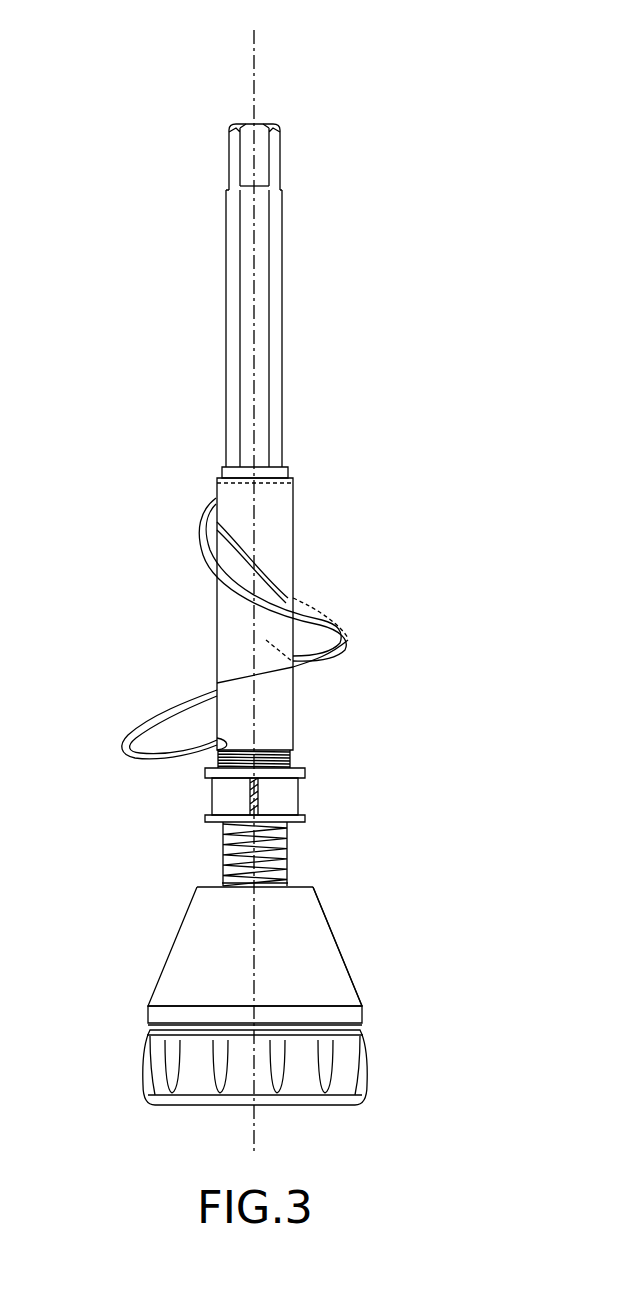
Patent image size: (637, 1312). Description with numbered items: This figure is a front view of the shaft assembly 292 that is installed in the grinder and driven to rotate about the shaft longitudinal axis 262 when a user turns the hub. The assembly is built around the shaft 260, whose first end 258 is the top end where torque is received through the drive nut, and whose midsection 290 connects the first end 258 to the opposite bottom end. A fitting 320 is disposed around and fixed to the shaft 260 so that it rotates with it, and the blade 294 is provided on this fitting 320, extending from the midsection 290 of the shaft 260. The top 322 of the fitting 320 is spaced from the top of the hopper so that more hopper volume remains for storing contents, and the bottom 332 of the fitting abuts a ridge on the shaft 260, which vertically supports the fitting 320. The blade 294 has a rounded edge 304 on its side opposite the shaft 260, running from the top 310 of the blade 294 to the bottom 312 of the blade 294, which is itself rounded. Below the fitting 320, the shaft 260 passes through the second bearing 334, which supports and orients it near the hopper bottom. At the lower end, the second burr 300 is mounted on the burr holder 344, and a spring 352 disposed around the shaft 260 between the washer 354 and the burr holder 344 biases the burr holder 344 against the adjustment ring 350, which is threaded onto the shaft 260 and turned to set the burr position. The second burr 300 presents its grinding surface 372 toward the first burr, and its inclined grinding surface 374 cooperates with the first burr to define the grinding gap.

The shaft longitudinal axis 262 is at (254, 48).
The first end 258 is at (262, 153).
The shaft 260 is at (260, 413).
The midsection 290 is at (260, 450).
The top of the fitting 322 is at (275, 478).
The fitting 320 is at (268, 625).
The top of the blade 310 is at (208, 508).
The edge 304 is at (330, 613).
The blade 294 is at (310, 643).
The bottom of the blade 312 is at (160, 722).
The bottom of the fitting 332 is at (298, 765).
The second bearing 334 is at (290, 800).
The washer 354 is at (302, 818).
The spring 352 is at (222, 853).
The burr holder 344 is at (222, 885).
The second burr 300 is at (205, 948).
The grinding surface 372 is at (320, 978).
The grinding surface 374 is at (255, 1015).
The adjustment ring 350 is at (140, 1052).
The shaft assembly 292 is at (418, 788).